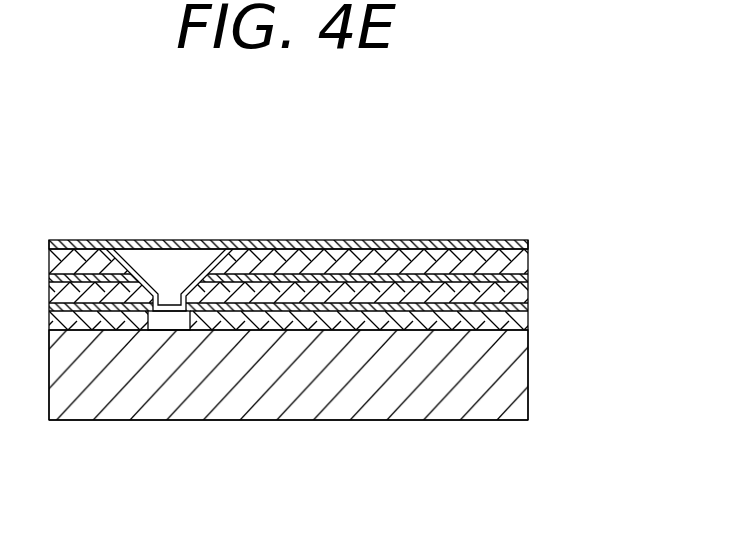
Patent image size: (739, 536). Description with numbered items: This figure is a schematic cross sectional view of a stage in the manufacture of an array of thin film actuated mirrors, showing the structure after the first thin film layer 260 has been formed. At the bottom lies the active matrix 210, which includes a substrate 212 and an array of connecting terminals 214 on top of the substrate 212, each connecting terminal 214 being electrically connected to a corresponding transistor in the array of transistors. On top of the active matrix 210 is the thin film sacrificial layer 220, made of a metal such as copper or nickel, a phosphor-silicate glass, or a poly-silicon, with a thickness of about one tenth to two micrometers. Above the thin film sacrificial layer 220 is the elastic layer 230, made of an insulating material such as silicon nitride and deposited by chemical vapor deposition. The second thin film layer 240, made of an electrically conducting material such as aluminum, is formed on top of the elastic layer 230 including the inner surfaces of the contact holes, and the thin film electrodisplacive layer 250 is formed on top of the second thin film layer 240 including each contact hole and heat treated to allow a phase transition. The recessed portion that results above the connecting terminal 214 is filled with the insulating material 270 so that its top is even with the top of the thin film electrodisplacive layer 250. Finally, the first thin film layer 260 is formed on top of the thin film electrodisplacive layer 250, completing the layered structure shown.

The active matrix 210 is at (538, 331).
The substrate 212 is at (379, 402).
The connecting terminal 214 is at (157, 322).
The thin film sacrificial layer 220 is at (512, 318).
The elastic layer 230 is at (444, 292).
The second thin film layer 240 is at (350, 275).
The thin film electrodisplacive layer 250 is at (245, 262).
The first thin film layer 260 is at (177, 243).
The insulating material 270 is at (152, 262).